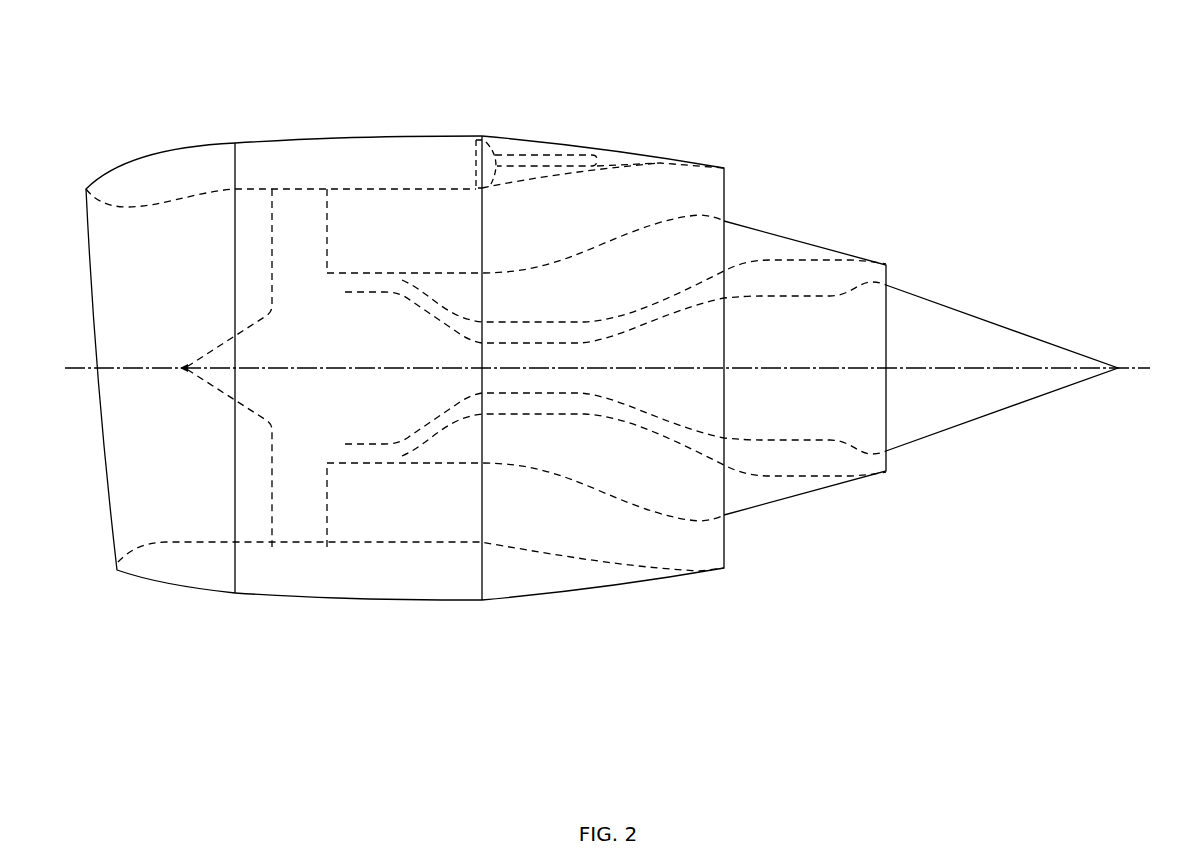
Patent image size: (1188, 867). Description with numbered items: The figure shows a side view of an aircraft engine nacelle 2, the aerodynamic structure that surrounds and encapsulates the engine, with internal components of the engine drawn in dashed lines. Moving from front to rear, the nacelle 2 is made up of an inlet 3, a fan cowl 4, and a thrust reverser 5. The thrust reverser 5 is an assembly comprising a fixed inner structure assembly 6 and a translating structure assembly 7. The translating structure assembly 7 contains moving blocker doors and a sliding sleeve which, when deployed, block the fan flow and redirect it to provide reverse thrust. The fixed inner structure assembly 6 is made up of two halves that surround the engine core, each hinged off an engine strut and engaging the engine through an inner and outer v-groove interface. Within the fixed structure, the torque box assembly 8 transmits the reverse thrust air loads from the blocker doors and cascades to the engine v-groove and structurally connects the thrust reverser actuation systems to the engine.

The nacelle 2 is at (573, 638).
The inlet 3 is at (148, 582).
The fan cowl 4 is at (275, 601).
The thrust reverser 5 is at (677, 581).
The fixed inner structure assembly 6 is at (470, 165).
The translating structure assembly 7 is at (574, 147).
The torque box assembly 8 is at (472, 137).